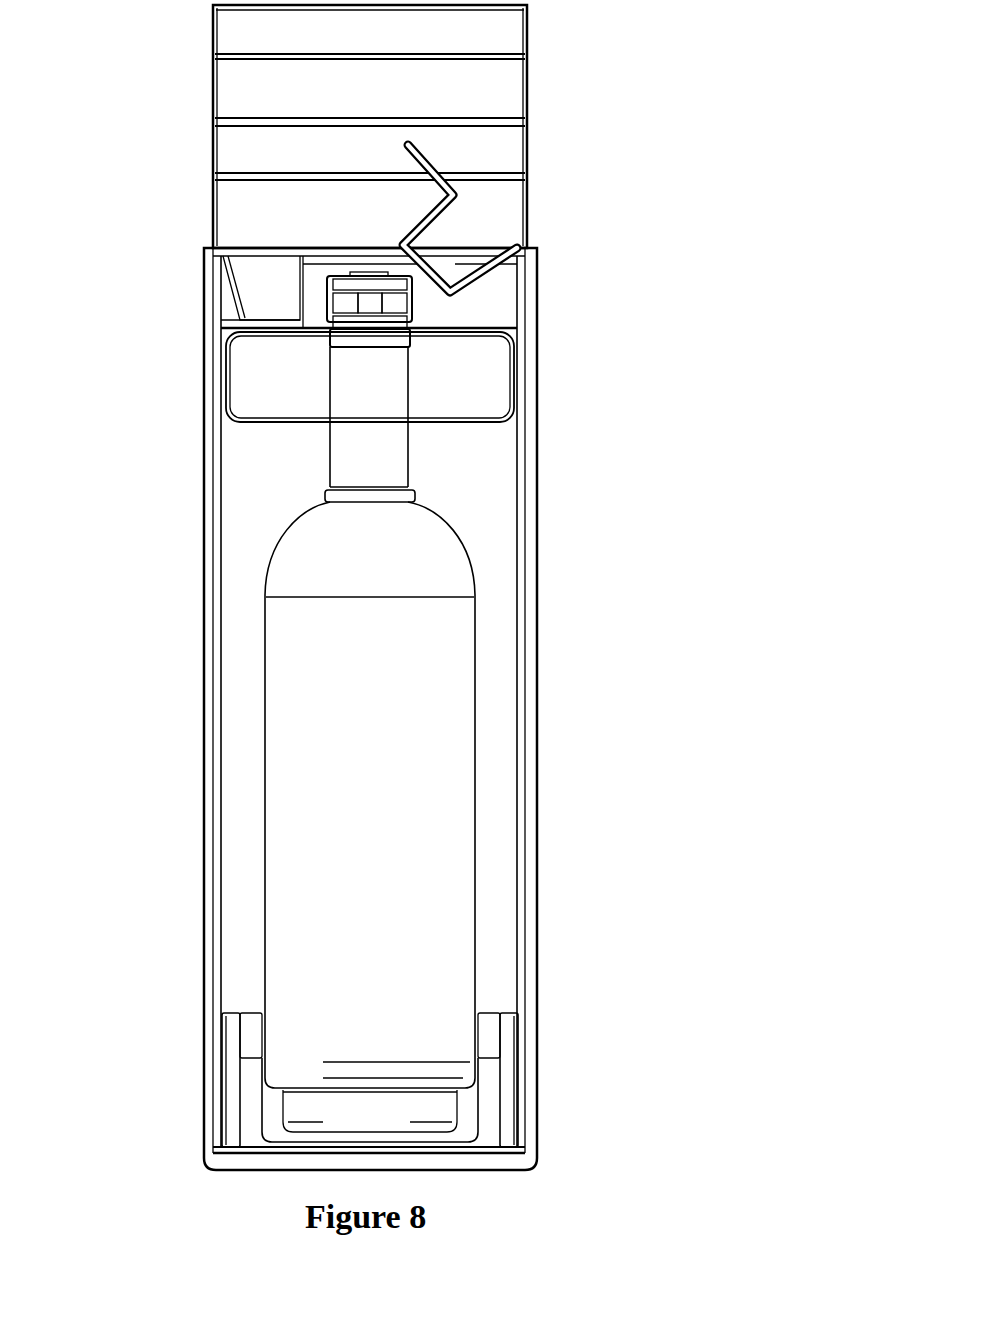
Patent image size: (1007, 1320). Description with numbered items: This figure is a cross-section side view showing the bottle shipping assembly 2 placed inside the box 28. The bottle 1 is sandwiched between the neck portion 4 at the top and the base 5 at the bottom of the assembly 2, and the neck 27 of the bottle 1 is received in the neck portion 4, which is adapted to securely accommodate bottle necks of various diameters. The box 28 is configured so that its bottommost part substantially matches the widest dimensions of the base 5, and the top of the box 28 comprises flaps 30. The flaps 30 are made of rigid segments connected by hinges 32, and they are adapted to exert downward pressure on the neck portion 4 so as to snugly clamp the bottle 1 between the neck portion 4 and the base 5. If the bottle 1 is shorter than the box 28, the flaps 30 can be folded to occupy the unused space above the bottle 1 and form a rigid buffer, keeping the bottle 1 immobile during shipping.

The bottle 1 is at (366, 680).
The bottle shipping assembly 2 is at (401, 587).
The neck portion 4 is at (484, 368).
The base 5 is at (230, 1030).
The neck 27 is at (370, 467).
The box 28 is at (203, 497).
The flaps 30 is at (505, 147).
The hinges 32 is at (528, 53).